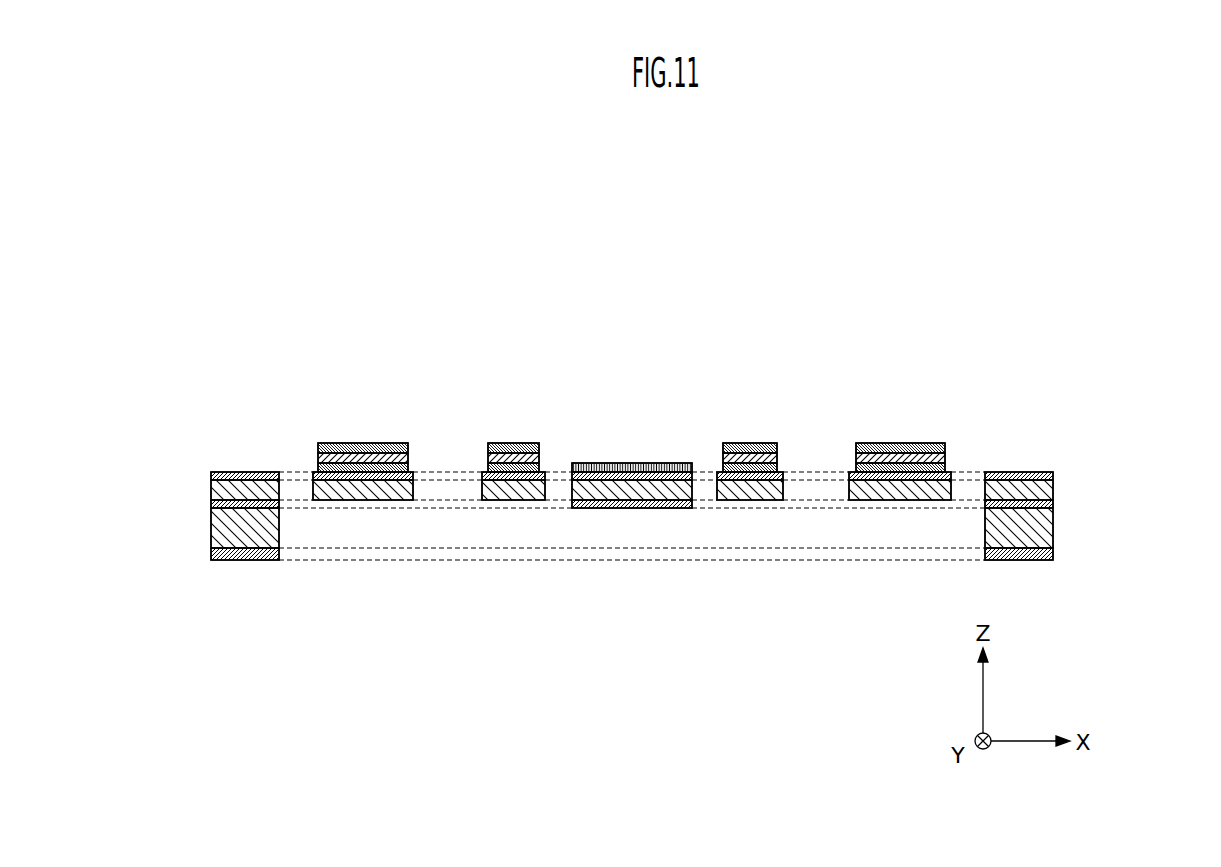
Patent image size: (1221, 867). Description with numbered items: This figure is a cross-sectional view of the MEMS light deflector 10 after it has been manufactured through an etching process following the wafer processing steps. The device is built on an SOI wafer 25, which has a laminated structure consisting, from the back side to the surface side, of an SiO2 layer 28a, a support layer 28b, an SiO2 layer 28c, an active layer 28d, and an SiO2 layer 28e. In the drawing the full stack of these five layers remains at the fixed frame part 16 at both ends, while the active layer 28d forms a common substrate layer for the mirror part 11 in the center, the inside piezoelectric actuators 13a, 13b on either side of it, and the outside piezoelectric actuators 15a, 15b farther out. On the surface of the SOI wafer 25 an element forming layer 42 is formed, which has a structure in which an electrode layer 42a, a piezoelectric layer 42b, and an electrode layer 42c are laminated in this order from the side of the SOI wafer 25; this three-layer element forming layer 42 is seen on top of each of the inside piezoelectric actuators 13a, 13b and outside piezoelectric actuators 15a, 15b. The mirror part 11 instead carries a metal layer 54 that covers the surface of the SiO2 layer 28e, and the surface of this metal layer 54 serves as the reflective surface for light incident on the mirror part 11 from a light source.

The light deflector 10 is at (1065, 250).
The mirror part 11 is at (622, 458).
The inside piezoelectric actuator 13a is at (515, 433).
The inside piezoelectric actuator 13b is at (742, 432).
The outside piezoelectric actuator 15a is at (361, 435).
The outside piezoelectric actuator 15b is at (923, 434).
The fixed frame part 16 is at (222, 472).
The SOI wafer 25 is at (1159, 408).
The SiO2 layer 28a is at (1053, 553).
The support layer 28b is at (1053, 535).
The SiO2 layer 28c is at (1053, 504).
The active layer 28d is at (1053, 490).
The SiO2 layer 28e is at (1053, 476).
The element forming layer 42 is at (206, 283).
The electrode layer 42a is at (318, 467).
The piezoelectric layer 42b is at (318, 458).
The electrode layer 42c is at (318, 447).
The metal layer 54 is at (563, 465).